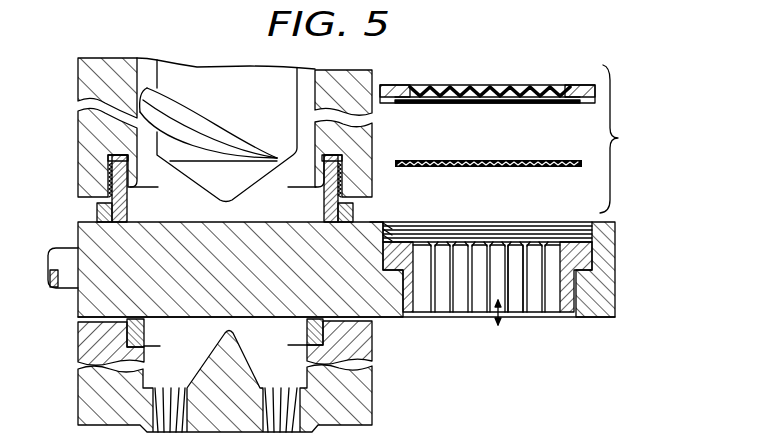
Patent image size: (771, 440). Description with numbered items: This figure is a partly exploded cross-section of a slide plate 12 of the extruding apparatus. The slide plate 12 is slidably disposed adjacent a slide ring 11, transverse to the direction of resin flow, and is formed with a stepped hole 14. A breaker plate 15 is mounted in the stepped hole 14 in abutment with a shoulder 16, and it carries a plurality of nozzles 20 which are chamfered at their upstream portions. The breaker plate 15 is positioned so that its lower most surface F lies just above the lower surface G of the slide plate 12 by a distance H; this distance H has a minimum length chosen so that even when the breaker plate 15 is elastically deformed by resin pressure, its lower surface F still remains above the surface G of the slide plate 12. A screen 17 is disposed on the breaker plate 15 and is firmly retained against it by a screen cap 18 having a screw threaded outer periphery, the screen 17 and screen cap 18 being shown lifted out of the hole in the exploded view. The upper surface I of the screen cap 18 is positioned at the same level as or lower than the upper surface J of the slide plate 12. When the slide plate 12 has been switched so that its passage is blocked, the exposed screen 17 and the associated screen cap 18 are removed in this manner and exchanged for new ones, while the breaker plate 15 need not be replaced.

The slide ring 11 is at (127, 337).
The slide plate 12 is at (95, 299).
The stepped hole 14 is at (398, 302).
The breaker plate 15 is at (403, 248).
The shoulder 16 is at (580, 273).
The screen 17 is at (442, 160).
The screen cap 18 is at (405, 84).
The nozzle 20 is at (517, 303).
The lower most surface of the breaker plate F is at (460, 313).
The lower surface of the slide plate G is at (386, 318).
The distance H is at (497, 316).
The upper surface of the screen cap I is at (527, 84).
The upper surface of the slide plate J is at (370, 220).